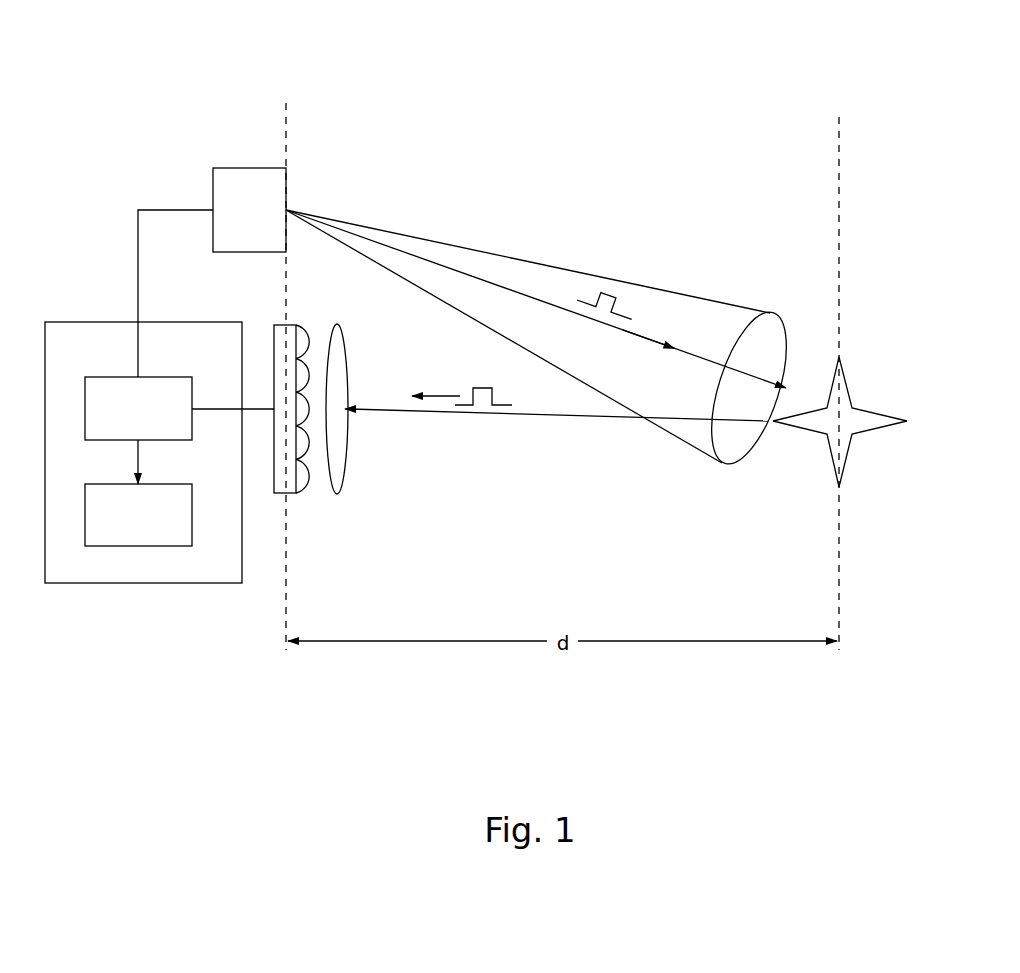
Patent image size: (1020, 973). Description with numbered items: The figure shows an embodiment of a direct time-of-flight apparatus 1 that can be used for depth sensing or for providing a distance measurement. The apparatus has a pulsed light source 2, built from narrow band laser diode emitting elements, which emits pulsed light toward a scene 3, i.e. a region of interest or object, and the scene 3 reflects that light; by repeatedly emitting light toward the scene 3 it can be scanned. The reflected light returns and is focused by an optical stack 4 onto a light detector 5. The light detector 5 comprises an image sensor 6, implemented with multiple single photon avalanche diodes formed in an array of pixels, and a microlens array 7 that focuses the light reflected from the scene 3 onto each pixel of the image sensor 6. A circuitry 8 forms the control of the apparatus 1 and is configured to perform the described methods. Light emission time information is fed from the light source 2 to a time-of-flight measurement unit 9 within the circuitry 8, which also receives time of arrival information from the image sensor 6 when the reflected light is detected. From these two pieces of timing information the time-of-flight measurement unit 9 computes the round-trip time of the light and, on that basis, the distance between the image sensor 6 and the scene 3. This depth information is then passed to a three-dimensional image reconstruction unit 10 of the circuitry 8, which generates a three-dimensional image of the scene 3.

The ToF apparatus 1 is at (412, 75).
The pulsed light source 2 is at (249, 210).
The scene 3 is at (885, 448).
The optical stack 4 is at (353, 446).
The light detector 5 is at (320, 512).
The image sensor 6 is at (275, 493).
The microlens array 7 is at (299, 332).
The circuitry 8 is at (67, 320).
The time-of-flight measurement unit 9 is at (138, 408).
The 3D image reconstruction unit 10 is at (138, 515).